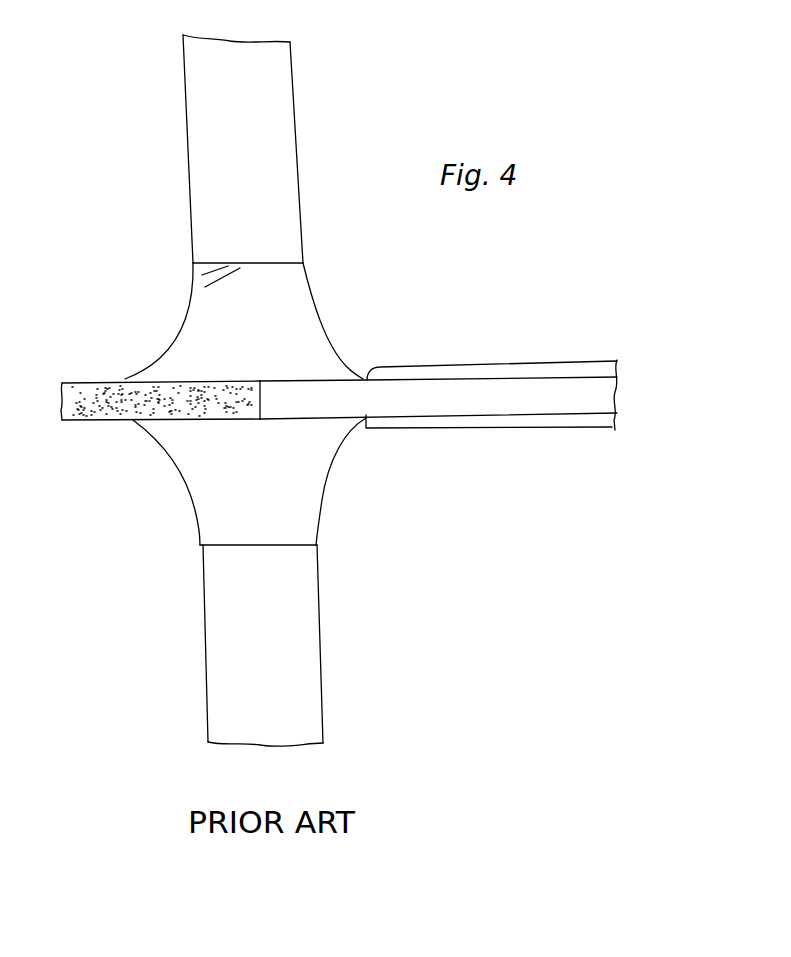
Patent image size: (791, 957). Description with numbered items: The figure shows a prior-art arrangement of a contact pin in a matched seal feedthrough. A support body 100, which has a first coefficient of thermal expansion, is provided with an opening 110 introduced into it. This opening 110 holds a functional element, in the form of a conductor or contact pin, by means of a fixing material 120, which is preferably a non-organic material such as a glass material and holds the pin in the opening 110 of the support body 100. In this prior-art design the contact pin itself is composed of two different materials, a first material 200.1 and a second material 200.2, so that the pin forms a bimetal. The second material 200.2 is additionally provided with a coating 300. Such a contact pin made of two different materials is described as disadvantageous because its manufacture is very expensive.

The support body 100 is at (278, 156).
The opening 110 is at (281, 259).
The fixing material 120 is at (308, 327).
The first material 200.1 is at (112, 402).
The second material 200.2 is at (363, 398).
The coating 300 is at (452, 377).